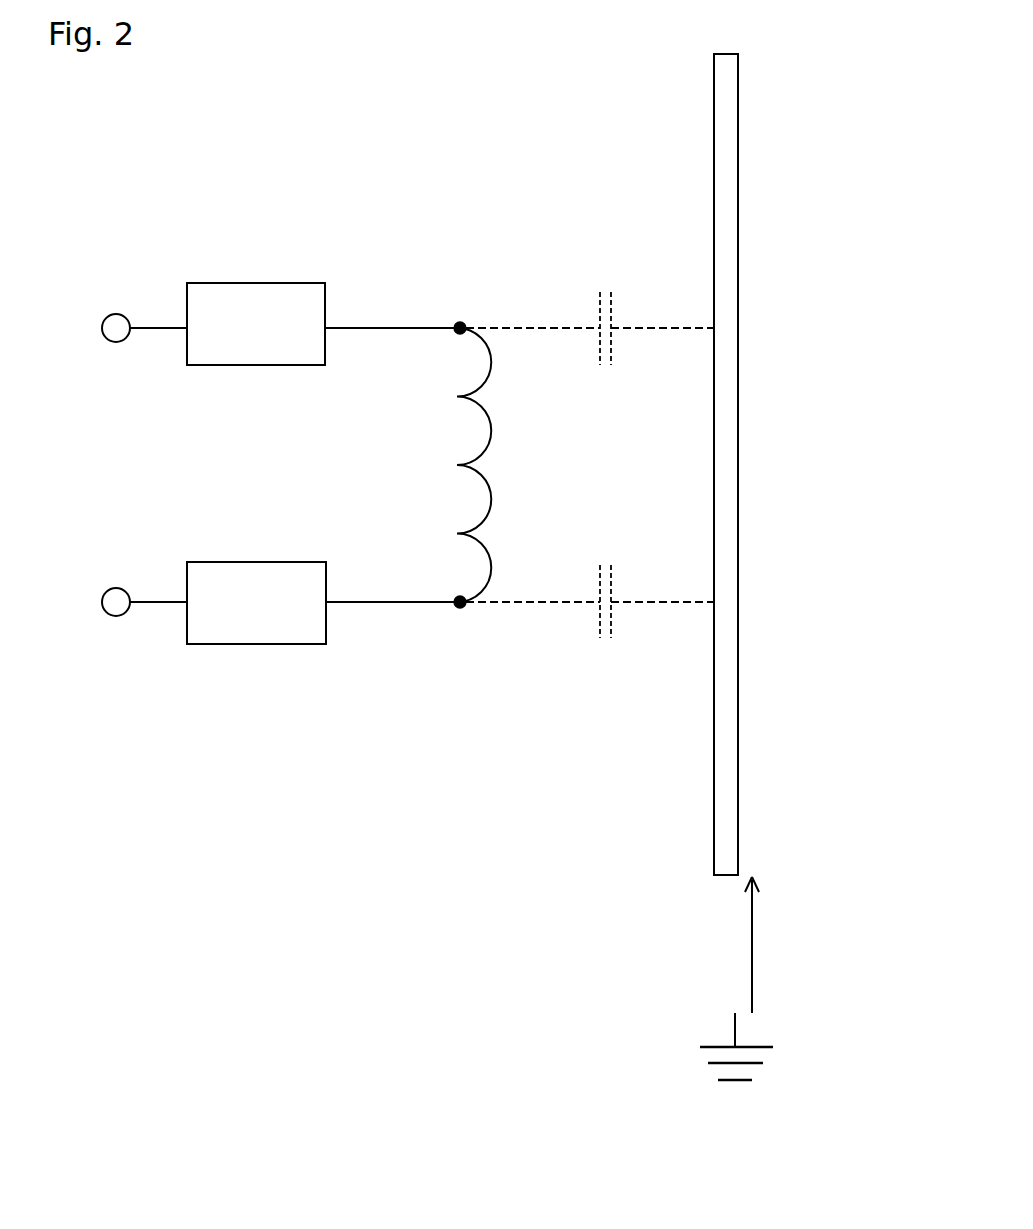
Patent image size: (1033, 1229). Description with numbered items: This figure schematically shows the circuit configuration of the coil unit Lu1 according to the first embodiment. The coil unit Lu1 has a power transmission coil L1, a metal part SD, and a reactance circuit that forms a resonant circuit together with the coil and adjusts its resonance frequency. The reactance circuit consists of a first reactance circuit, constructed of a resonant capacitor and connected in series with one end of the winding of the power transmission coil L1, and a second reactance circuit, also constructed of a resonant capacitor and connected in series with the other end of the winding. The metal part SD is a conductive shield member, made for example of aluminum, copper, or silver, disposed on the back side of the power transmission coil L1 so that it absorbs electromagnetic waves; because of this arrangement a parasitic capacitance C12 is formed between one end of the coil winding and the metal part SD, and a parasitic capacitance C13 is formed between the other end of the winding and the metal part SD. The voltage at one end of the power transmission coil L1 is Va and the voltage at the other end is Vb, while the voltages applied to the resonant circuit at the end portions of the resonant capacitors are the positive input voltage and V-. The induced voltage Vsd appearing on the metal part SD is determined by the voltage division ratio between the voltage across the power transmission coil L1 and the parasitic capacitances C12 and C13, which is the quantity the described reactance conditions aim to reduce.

The parasitic capacitance C12 is at (590, 312).
The parasitic capacitance C13 is at (590, 617).
The power transmission coil L1 is at (496, 465).
The metal part SD is at (738, 304).
The voltage at one end of the power transmission coil Va is at (442, 341).
The voltage at the other end of the power transmission coil Vb is at (440, 585).
The voltage applied to an end portion of the resonant capacitor C11 V- is at (124, 597).
The induced voltage Vsd is at (778, 945).
The coil unit Lu1 is at (381, 1052).